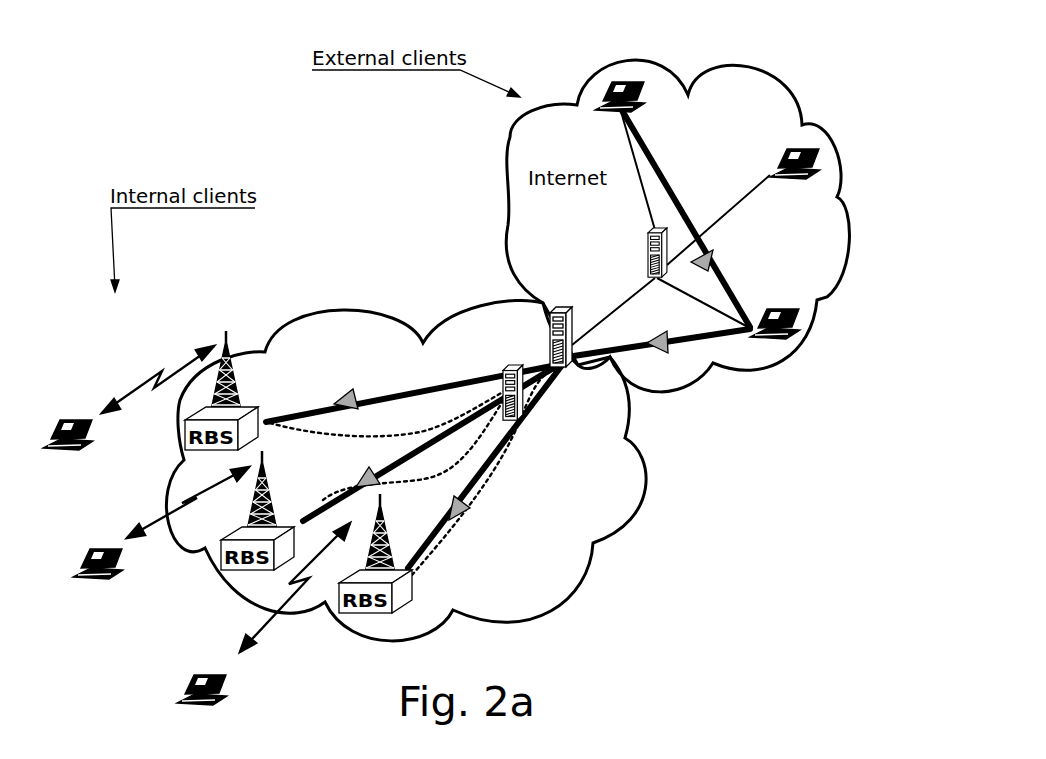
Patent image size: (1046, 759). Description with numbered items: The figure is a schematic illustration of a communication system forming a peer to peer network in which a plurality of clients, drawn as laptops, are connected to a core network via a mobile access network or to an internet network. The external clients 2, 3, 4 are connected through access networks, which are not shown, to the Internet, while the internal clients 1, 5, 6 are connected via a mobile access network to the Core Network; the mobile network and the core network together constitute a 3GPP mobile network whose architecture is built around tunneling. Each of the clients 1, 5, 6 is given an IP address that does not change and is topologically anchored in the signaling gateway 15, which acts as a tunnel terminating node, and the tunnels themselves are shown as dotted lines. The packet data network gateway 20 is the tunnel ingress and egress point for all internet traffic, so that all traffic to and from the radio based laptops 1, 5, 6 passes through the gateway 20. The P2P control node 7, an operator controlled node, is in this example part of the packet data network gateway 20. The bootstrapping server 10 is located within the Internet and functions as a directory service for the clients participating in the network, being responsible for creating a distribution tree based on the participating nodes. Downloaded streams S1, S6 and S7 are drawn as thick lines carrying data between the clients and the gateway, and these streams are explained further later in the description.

The client 1 is at (73, 421).
The client 2 is at (627, 83).
The client 3 is at (806, 152).
The client 4 is at (782, 310).
The client 5 is at (213, 677).
The client 6 is at (103, 550).
The P2P control node 7 is at (565, 370).
The bootstrapping server 10 is at (662, 230).
The signaling gateway 15 is at (513, 368).
The packet data network gateway 20 is at (560, 306).
The downloaded stream S1 is at (712, 265).
The downloaded stream S6 is at (657, 352).
The downloaded stream S7 is at (348, 400).